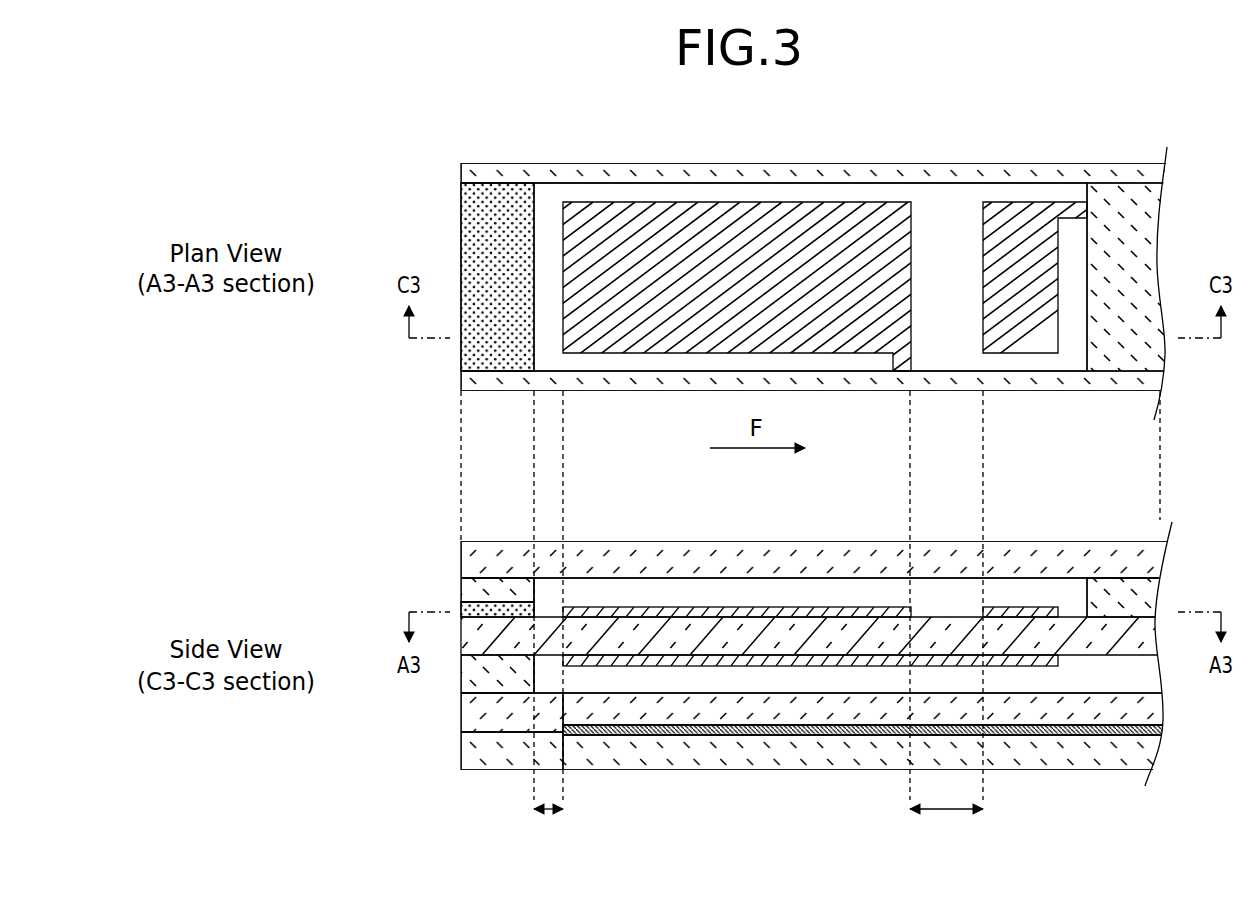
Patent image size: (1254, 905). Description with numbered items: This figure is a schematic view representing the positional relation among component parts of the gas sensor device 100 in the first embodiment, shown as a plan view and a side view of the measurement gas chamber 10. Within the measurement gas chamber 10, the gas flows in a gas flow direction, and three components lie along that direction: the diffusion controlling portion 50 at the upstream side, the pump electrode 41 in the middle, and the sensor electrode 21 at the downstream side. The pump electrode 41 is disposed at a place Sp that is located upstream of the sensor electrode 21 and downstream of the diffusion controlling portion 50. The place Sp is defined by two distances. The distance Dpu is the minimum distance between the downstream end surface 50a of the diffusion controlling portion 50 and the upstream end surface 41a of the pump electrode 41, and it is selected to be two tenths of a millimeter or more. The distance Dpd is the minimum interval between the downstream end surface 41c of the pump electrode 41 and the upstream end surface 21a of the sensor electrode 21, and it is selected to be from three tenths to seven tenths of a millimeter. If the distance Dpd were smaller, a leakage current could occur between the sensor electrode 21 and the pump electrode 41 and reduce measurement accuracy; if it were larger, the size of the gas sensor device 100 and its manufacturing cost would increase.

The gas sensor device 100 is at (432, 161).
The measurement gas chamber 10 is at (829, 192).
The diffusion controlling portion 50 is at (502, 192).
The downstream end surface of the diffusion controlling portion 50a is at (548, 197).
The pump electrode 41 is at (677, 228).
The upstream end surface of the pump electrode 41a is at (557, 240).
The downstream end surface of the pump electrode 41c is at (925, 226).
The sensor electrode 21 is at (1027, 218).
The upstream end surface of the sensor electrode 21a is at (977, 226).
The place (space) Sp is at (745, 197).
The distance Dpu is at (548, 826).
The distance Dpd is at (946, 826).